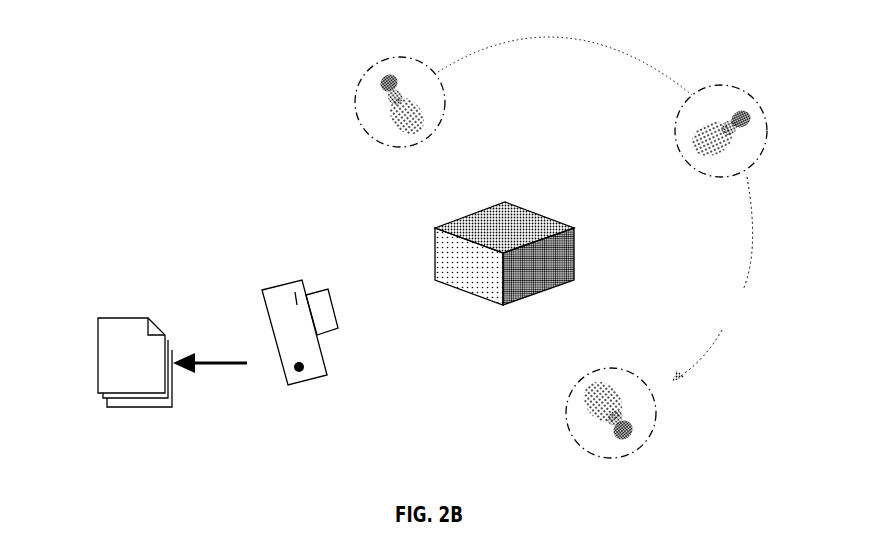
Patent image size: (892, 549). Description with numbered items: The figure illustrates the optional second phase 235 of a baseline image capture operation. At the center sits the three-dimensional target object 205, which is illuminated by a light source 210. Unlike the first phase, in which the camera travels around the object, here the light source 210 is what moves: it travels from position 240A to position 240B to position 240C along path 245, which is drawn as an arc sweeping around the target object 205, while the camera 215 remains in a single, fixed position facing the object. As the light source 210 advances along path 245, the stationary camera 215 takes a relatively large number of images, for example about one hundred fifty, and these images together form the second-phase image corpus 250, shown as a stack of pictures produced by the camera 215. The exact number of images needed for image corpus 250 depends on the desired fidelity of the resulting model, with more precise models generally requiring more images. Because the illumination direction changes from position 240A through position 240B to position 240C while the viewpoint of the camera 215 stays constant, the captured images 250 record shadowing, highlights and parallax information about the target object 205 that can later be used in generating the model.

The phase-2 235 is at (158, 73).
The light source 210 is at (391, 72).
The position 240A is at (356, 93).
The position 240B is at (768, 140).
The position 240C is at (572, 438).
The path 245 is at (712, 279).
The 3D target object 205 is at (503, 228).
The camera 215 is at (262, 307).
The phase-2 image corpus 250 is at (98, 353).